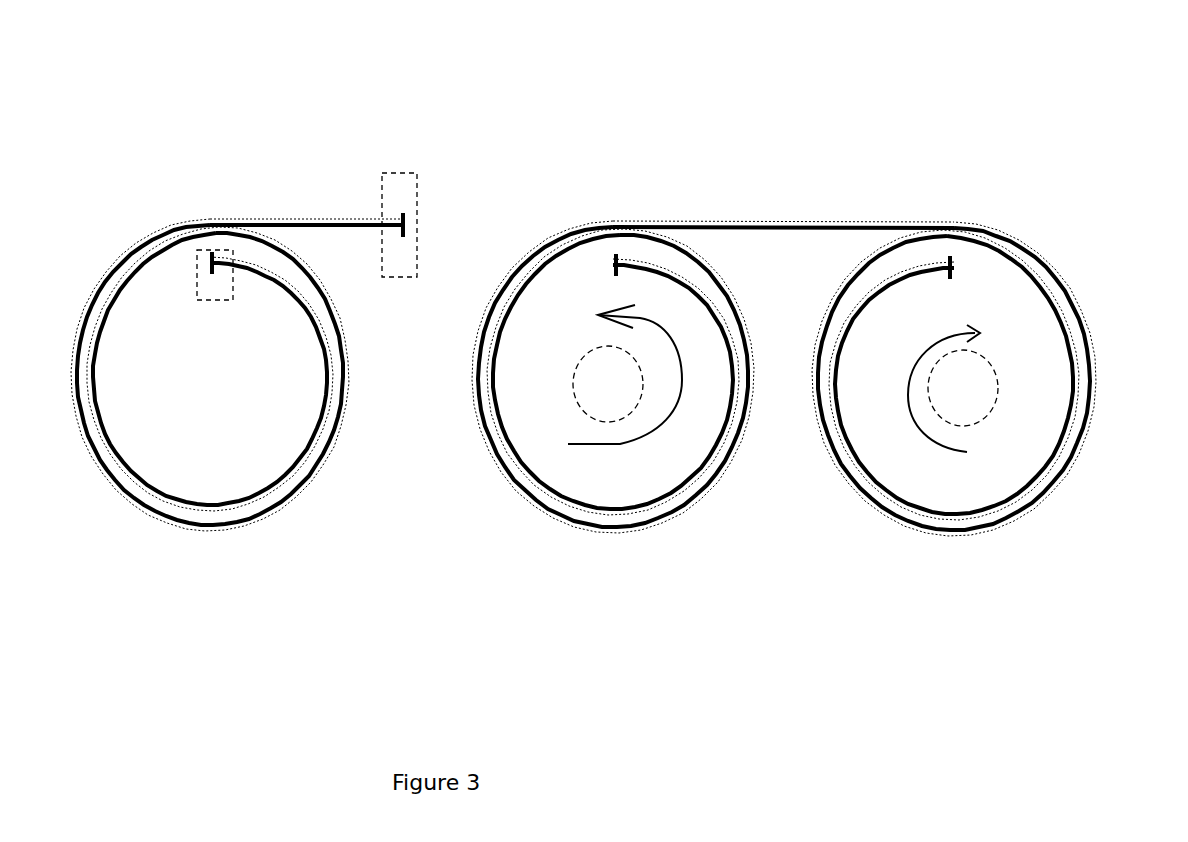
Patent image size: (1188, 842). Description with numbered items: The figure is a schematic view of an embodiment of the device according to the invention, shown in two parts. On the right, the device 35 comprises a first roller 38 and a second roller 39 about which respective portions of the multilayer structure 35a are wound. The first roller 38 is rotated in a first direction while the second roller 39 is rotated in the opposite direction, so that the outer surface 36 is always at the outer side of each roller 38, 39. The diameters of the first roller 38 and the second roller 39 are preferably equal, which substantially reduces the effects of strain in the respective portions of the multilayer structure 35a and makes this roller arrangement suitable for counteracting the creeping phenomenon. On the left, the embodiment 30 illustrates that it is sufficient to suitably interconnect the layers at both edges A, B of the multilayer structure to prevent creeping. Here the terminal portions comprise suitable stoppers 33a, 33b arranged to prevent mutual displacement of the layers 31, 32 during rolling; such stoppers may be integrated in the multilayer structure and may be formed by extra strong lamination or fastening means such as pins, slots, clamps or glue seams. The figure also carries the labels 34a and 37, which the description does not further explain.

The embodiment 30 is at (267, 48).
The layer 31 is at (95, 288).
The layer 32 is at (117, 298).
The stopper 33a is at (407, 223).
The stopper 33b is at (210, 262).
The web section unwound from supply roll 34a is at (303, 223).
The device 35 is at (795, 164).
The multilayer structure 35a is at (822, 227).
The outer surface 36 is at (542, 250).
The inner layer of wound roll 37 is at (518, 298).
The first roller 38 is at (587, 413).
The second roller 39 is at (990, 417).
The edge A is at (393, 173).
The edge B is at (222, 300).